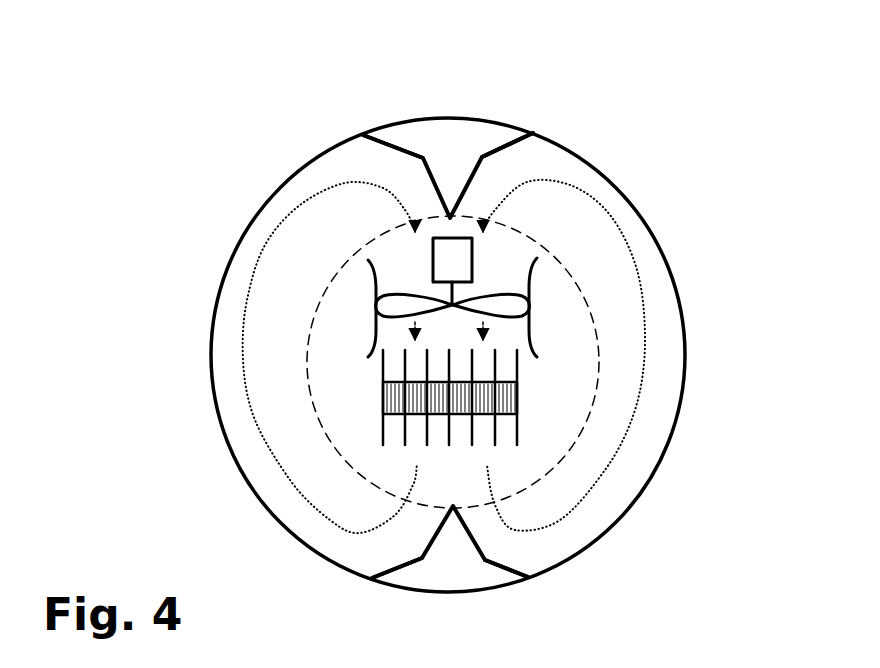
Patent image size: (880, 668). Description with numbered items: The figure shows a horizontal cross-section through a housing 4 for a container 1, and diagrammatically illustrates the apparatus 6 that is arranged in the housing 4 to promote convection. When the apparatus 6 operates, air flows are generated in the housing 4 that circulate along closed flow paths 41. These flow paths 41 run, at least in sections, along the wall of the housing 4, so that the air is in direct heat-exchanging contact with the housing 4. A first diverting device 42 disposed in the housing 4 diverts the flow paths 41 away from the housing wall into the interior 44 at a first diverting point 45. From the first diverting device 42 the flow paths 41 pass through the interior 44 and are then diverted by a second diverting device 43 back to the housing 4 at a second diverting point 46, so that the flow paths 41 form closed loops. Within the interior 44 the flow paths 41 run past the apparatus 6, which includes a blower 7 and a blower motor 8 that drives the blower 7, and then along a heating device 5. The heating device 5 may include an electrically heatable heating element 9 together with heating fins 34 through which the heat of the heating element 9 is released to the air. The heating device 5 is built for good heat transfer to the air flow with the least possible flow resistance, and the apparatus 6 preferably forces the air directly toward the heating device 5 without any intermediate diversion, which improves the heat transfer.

The container 1 is at (176, 158).
The housing 4 is at (667, 248).
The heating device 5 is at (518, 395).
The apparatus 6 is at (513, 252).
The blower 7 is at (392, 292).
The blower motor 8 is at (432, 240).
The heating element 9 is at (486, 420).
The heating fins 34 is at (518, 430).
The flow paths 41 is at (262, 257).
The first diverting device 42 is at (412, 147).
The second diverting device 43 is at (413, 568).
The interior 44 is at (570, 453).
The first diverting point 45 is at (369, 150).
The second diverting point 46 is at (364, 563).